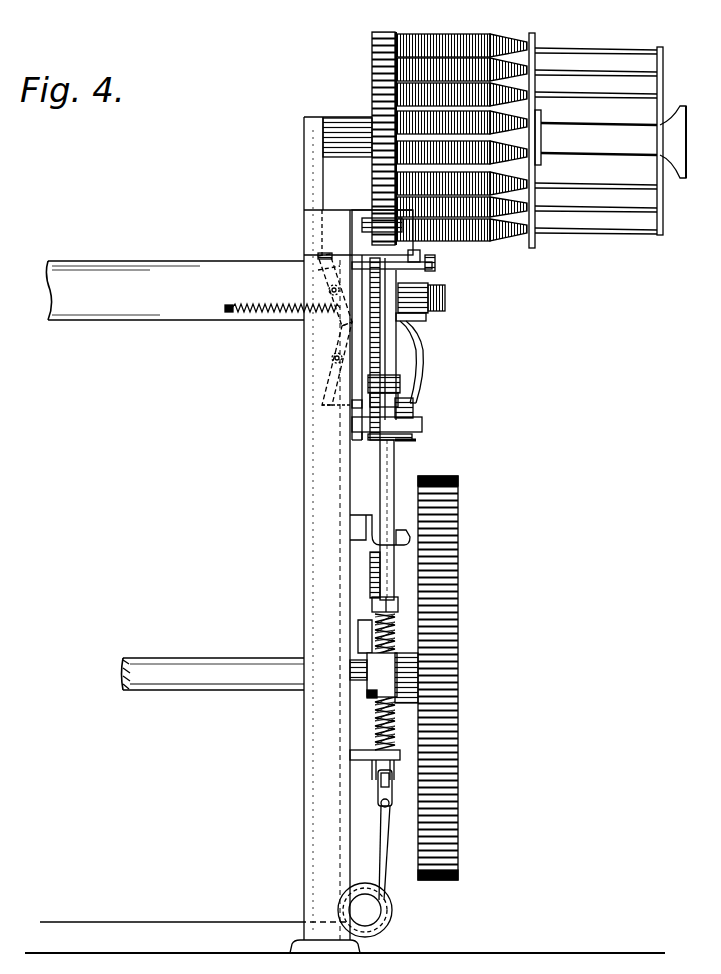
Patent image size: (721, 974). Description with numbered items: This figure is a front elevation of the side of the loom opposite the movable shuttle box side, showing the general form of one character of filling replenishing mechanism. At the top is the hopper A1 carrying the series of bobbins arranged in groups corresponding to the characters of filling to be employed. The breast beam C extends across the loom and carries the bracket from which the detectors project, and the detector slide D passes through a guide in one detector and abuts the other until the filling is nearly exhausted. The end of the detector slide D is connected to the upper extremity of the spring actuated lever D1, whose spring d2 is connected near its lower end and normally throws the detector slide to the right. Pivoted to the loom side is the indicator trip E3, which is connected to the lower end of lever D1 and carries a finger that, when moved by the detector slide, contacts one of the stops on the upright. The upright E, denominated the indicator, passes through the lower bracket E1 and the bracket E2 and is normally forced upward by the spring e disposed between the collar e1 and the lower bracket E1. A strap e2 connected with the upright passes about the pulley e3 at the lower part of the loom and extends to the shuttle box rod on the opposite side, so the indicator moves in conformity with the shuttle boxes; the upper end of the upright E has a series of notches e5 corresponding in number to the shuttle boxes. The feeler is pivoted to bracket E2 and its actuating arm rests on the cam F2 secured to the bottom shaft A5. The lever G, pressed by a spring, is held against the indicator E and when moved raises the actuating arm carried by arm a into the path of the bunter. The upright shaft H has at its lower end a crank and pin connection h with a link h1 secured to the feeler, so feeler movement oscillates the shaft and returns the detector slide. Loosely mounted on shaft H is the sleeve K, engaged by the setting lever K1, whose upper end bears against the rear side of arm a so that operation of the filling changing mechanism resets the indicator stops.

The hopper A1 is at (432, 46).
The bottom shaft A5 is at (220, 664).
The breast beam C is at (175, 290).
The detector slide D is at (378, 262).
The spring actuated lever D1 is at (322, 275).
The spring d2 is at (279, 312).
The upright E is at (404, 351).
The lower bracket E1 is at (402, 757).
The bracket E2 is at (407, 542).
The indicator trip E3 is at (340, 364).
The spring e is at (396, 717).
The collar e1 is at (378, 605).
The strap e2 is at (381, 854).
The pulley e3 is at (391, 915).
The notches e5 is at (372, 362).
The cam F2 is at (372, 697).
The lever G is at (425, 336).
The upright shaft H is at (437, 318).
The sleeve K is at (398, 382).
The setting lever K1 is at (425, 297).
The arm a is at (412, 256).
The crank and pin connection h is at (388, 447).
The link h1 is at (418, 440).